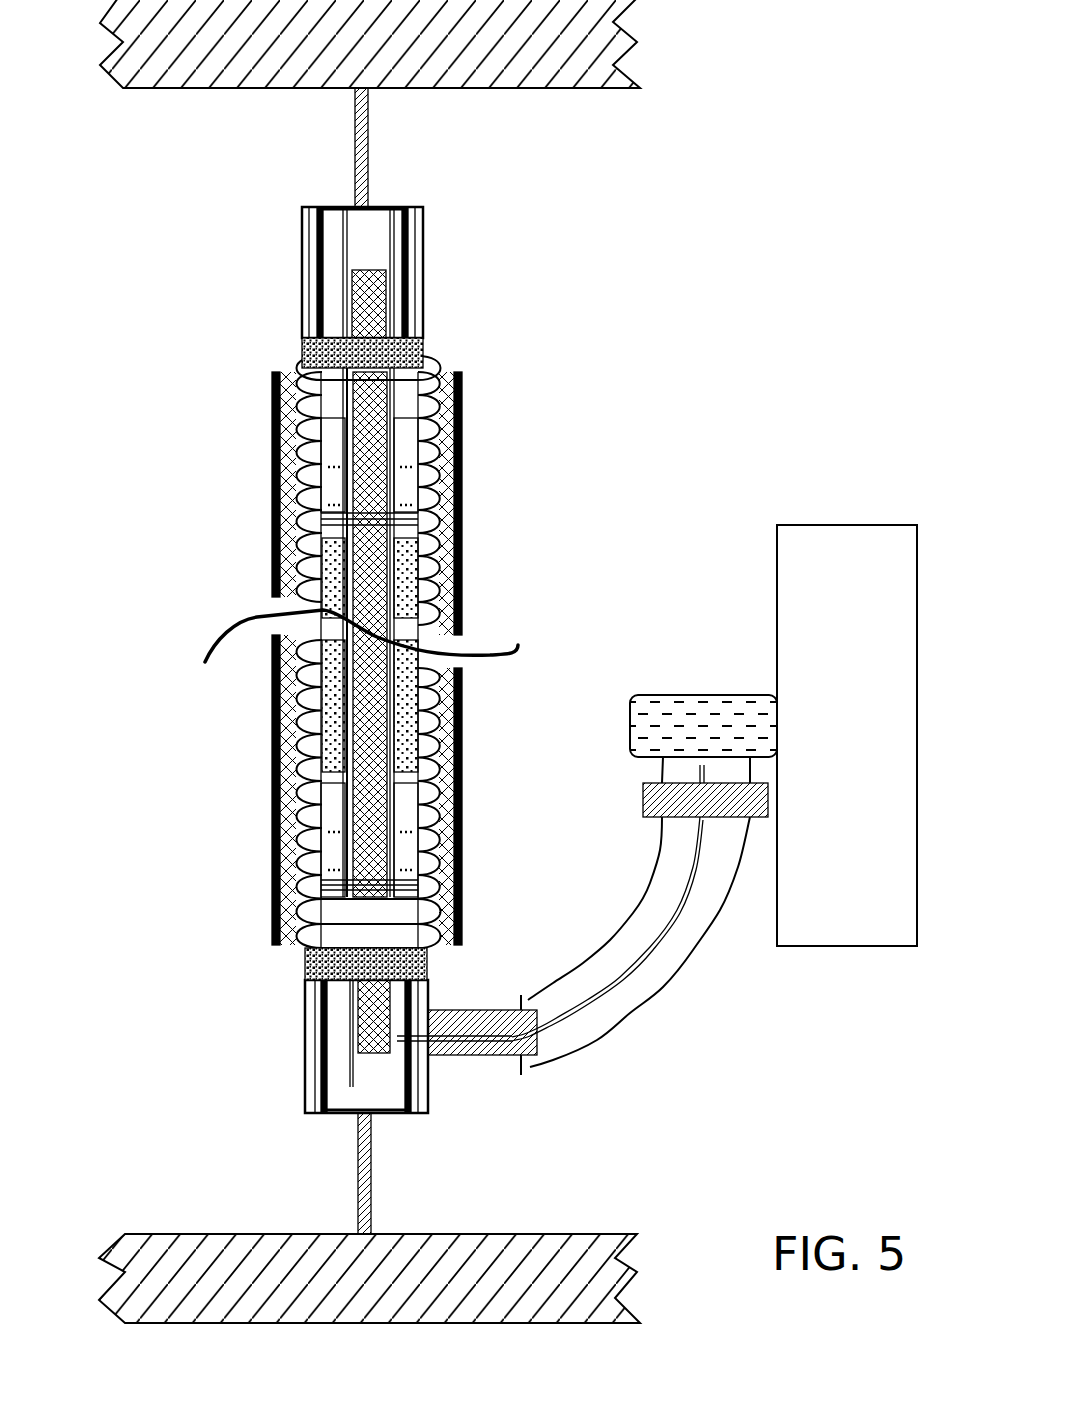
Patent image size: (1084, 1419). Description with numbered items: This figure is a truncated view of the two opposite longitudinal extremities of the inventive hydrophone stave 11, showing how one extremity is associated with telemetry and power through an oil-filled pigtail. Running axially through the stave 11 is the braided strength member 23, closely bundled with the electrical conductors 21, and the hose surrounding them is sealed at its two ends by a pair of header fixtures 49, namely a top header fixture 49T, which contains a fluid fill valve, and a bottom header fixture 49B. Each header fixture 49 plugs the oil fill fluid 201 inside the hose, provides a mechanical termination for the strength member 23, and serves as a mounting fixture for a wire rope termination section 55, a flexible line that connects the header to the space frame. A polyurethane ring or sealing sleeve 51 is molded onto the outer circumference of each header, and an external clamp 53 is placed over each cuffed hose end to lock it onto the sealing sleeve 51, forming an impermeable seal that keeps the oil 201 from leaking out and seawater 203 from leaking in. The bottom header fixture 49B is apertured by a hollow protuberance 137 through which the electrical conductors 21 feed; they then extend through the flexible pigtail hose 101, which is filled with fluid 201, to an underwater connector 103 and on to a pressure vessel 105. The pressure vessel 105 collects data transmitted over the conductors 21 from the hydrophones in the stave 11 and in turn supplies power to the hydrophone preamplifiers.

The hydrophone stave 11 is at (214, 393).
The electrical conductors 21 is at (340, 700).
The braided strength member 23 is at (465, 568).
The header fixture 49 is at (363, 660).
The top header fixture 49T is at (425, 240).
The bottom header fixture 49B is at (303, 998).
The polyurethane ring or sealing sleeve 51 is at (413, 292).
The external clamp 53 is at (305, 355).
The wire rope termination section 55 is at (380, 137).
The pigtail hose 101 is at (633, 1037).
The underwater connector 103 is at (672, 693).
The pressure vessel 105 is at (858, 946).
The hollow protuberance 137 is at (490, 1010).
The oil fill fluid 201 is at (315, 908).
The seawater 203 is at (467, 689).